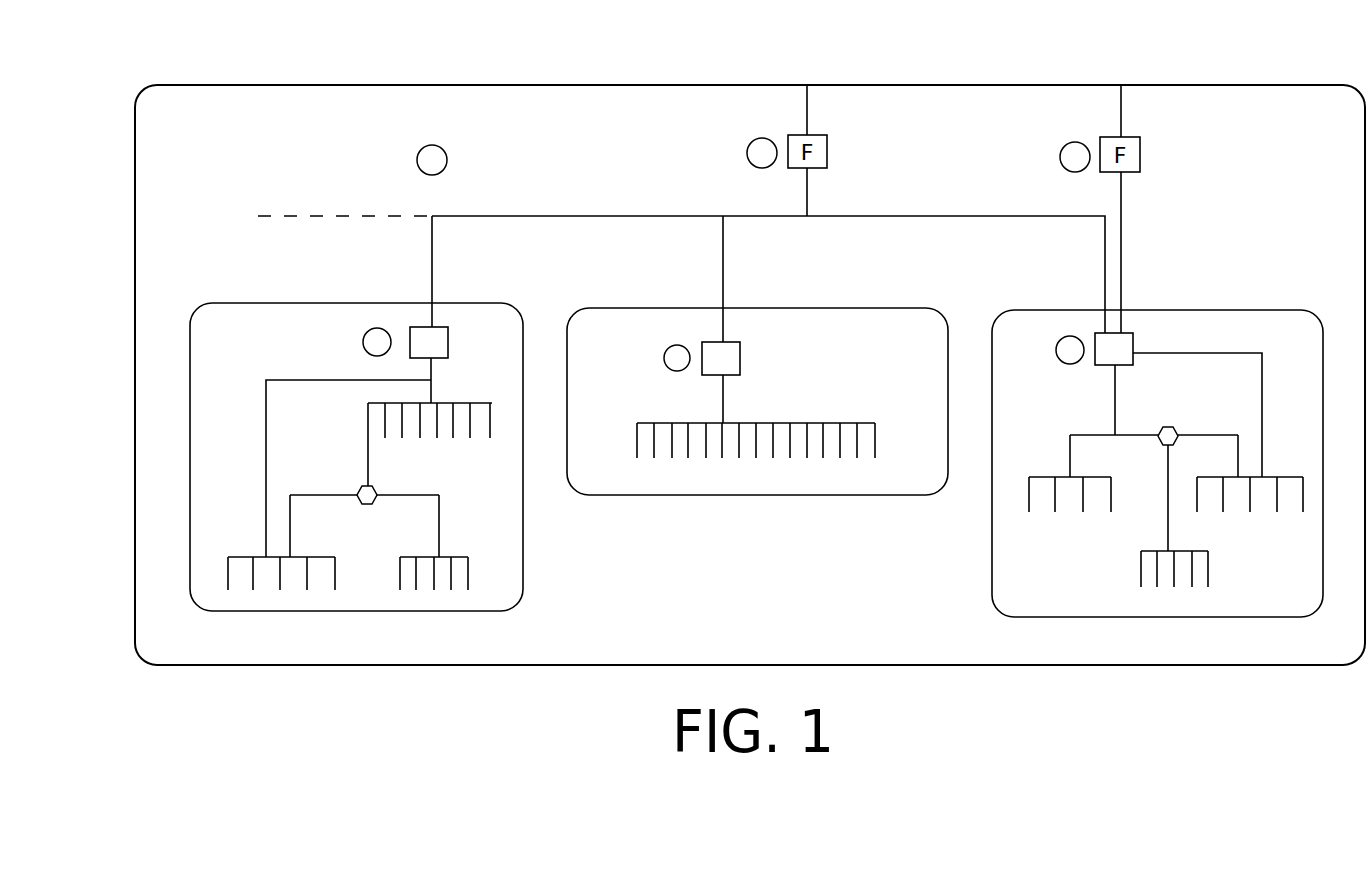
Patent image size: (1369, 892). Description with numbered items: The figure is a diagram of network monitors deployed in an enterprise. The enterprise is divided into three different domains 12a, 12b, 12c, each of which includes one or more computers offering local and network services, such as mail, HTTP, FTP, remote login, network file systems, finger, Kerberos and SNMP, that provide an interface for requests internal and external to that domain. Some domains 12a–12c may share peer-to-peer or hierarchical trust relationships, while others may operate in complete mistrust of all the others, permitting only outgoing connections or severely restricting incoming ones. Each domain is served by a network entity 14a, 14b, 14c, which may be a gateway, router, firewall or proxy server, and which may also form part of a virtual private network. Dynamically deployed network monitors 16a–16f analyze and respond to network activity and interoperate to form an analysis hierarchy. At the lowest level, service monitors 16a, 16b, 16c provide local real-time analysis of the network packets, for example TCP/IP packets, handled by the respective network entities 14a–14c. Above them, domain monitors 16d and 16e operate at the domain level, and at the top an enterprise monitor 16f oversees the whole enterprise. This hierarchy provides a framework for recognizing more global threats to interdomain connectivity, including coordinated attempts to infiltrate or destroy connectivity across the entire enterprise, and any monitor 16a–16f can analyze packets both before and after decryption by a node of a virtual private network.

The domain 12a is at (356, 463).
The domain 12b is at (757, 403).
The domain 12c is at (1134, 450).
The network entity 14a is at (448, 345).
The network entity 14b is at (740, 368).
The network entity 14c is at (1133, 355).
The service monitor 16a is at (363, 348).
The service monitor 16b is at (665, 351).
The service monitor 16c is at (1057, 345).
The domain monitor 16d is at (747, 152).
The domain monitor 16e is at (1061, 158).
The enterprise monitor 16f is at (420, 152).